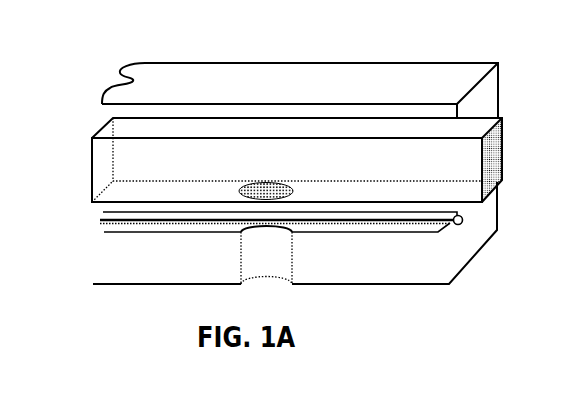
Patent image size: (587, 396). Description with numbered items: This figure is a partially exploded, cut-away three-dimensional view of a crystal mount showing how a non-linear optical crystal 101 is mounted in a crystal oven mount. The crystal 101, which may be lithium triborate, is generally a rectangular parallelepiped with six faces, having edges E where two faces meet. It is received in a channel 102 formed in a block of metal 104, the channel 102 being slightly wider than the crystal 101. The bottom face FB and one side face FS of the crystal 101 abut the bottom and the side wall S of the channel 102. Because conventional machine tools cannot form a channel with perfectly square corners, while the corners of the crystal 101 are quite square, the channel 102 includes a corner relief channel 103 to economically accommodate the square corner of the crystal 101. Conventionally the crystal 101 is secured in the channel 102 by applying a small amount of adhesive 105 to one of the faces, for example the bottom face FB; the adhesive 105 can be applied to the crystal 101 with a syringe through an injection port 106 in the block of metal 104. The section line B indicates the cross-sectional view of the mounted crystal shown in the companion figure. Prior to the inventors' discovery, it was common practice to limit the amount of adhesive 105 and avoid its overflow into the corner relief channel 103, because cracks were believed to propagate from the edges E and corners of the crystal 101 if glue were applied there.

The non-linear optical crystal 101 is at (483, 122).
The channel 102 is at (97, 114).
The corner relief channel 103 is at (463, 219).
The block of metal 104 is at (200, 78).
The adhesive 105 is at (249, 199).
The injection port 106 is at (294, 252).
The section line B- B is at (208, 148).
The side wall of the channel S is at (386, 110).
The edge E is at (385, 180).
The bottom face FB is at (142, 188).
The side face FS is at (503, 146).